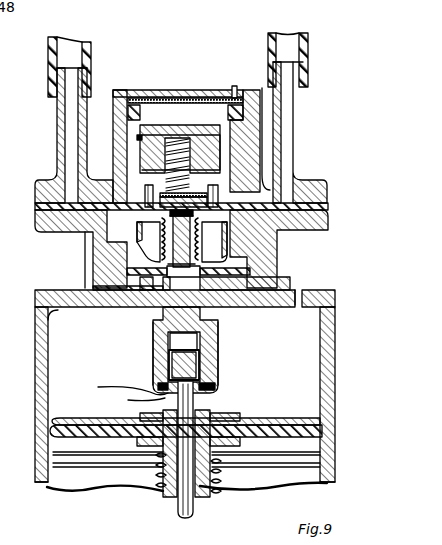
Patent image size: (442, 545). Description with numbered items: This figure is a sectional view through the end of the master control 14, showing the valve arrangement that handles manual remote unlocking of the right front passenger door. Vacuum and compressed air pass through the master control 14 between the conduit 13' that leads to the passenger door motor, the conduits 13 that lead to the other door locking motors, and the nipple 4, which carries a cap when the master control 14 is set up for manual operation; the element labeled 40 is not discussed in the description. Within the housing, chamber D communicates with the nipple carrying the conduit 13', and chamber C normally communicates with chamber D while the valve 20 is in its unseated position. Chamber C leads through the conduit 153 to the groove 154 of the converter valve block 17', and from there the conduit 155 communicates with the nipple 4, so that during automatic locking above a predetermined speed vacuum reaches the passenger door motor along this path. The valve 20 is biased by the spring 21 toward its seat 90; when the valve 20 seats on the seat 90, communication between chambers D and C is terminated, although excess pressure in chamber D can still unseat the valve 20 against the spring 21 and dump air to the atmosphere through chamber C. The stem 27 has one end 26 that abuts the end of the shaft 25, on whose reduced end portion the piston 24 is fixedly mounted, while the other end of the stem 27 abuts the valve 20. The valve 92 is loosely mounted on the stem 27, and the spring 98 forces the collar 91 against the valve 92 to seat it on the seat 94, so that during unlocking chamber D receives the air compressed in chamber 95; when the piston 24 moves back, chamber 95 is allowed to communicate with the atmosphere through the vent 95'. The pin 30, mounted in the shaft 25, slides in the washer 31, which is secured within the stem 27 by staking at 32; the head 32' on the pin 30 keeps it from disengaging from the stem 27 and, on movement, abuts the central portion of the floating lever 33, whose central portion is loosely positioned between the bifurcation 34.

The conduit 13 is at (56, 135).
The conduit 13' is at (90, 67).
The nipple 4 is at (303, 148).
The pipe fitting 40 is at (308, 64).
The converter valve block 17' is at (178, 127).
The seat 90 is at (243, 196).
The chamber C is at (262, 92).
The chamber D is at (100, 236).
The conduit 155 is at (235, 95).
The groove 154 is at (185, 103).
The conduit 153 is at (134, 132).
The spring 21 is at (142, 135).
The valve 20 is at (142, 176).
The collar 91 is at (162, 262).
The spring 98 is at (196, 250).
The valve 92 is at (276, 273).
The vent 95' is at (297, 258).
The seat 94 is at (135, 279).
The master control 14 is at (336, 326).
The stem 27 is at (155, 331).
The bifurcation 34 is at (153, 356).
The floating lever 33 is at (205, 348).
The head 32' is at (212, 365).
The staking 32 is at (176, 385).
The end of stem 26 is at (123, 389).
The washer 31 is at (136, 402).
The pin 30 is at (194, 412).
The shaft 25 is at (168, 496).
The piston 24 is at (280, 425).
The chamber 95 is at (210, 490).